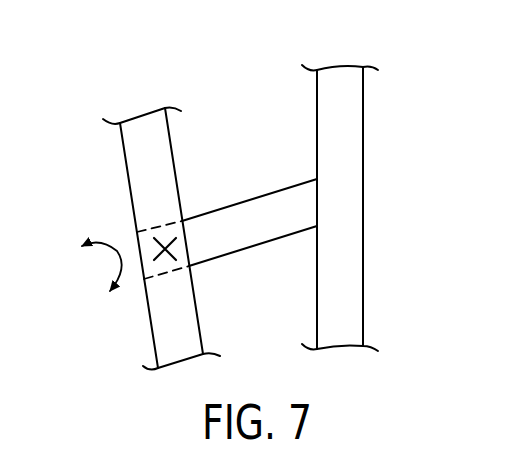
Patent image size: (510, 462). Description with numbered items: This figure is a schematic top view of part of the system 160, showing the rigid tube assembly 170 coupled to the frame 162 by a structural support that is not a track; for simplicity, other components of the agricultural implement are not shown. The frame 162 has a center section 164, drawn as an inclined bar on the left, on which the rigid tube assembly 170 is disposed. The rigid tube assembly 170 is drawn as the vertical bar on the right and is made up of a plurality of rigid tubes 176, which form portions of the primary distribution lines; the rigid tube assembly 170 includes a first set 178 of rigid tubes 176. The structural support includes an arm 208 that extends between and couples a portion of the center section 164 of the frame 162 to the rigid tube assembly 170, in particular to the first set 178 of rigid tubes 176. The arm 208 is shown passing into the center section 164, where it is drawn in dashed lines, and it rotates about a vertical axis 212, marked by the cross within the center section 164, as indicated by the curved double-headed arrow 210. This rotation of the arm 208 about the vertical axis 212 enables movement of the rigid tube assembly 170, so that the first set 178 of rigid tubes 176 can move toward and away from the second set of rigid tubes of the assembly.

The system 160 is at (180, 74).
The frame 162 is at (128, 185).
The center section 164 is at (123, 149).
The rigid tube assembly 170 is at (378, 274).
The rigid tubes 176 is at (363, 165).
The first set of rigid tubes 178 is at (343, 133).
The arm 208 is at (252, 197).
The arrow 210 is at (113, 260).
The vertical axis 212 is at (167, 264).